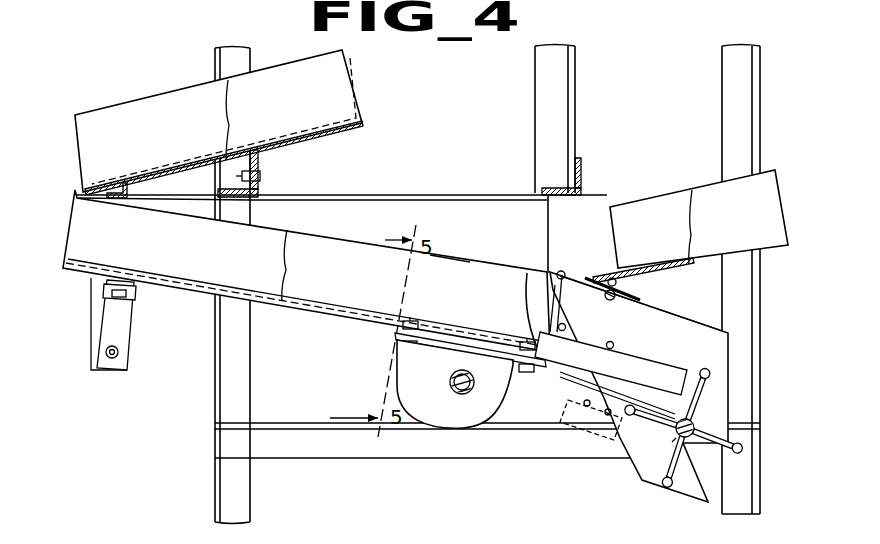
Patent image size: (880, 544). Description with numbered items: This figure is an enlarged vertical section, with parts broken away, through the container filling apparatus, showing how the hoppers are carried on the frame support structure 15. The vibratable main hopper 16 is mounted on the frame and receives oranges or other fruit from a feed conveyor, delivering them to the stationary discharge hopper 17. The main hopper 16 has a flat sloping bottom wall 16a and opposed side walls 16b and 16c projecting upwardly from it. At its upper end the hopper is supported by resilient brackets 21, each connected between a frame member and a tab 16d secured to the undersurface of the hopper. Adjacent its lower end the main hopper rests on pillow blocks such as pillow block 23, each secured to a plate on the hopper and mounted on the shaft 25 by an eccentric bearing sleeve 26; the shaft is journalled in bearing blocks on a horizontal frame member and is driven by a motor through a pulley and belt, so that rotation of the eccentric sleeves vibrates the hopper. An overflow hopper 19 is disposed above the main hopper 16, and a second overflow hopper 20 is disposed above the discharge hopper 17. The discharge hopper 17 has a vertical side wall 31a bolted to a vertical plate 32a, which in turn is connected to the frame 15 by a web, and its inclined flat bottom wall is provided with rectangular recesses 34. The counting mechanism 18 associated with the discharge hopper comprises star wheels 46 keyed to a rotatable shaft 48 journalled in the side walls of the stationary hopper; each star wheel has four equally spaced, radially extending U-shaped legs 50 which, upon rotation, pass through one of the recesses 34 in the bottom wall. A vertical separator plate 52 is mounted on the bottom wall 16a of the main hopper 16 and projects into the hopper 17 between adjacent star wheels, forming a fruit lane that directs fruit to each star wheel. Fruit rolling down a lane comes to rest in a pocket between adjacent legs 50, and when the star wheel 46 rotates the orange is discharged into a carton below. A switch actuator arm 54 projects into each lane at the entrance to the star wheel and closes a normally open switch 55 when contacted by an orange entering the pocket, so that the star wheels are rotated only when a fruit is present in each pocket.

The frame support structure 15 is at (372, 195).
The main hopper 16 is at (340, 287).
The bottom wall 16a is at (190, 288).
The side wall 16b is at (130, 242).
The side wall 16c is at (468, 282).
The tab 16d is at (125, 290).
The discharge hopper 17 is at (660, 342).
The counting mechanism 18 is at (681, 414).
The overflow hopper 19 is at (318, 100).
The second overflow hopper 20 is at (720, 208).
The resilient bracket 21 is at (133, 306).
The pillow block 23 is at (470, 410).
The shaft 25 is at (454, 385).
The eccentric bearing sleeve 26 is at (480, 372).
The side wall 31a is at (680, 322).
The vertical plate 32a is at (582, 249).
The rectangular recess 34 is at (648, 400).
The star wheel 46 is at (676, 438).
The rotatable shaft 48 is at (702, 421).
The leg 50 is at (703, 371).
The separator plate 52 is at (620, 355).
The switch actuator arm 54 is at (655, 395).
The normally open switch 55 is at (560, 407).